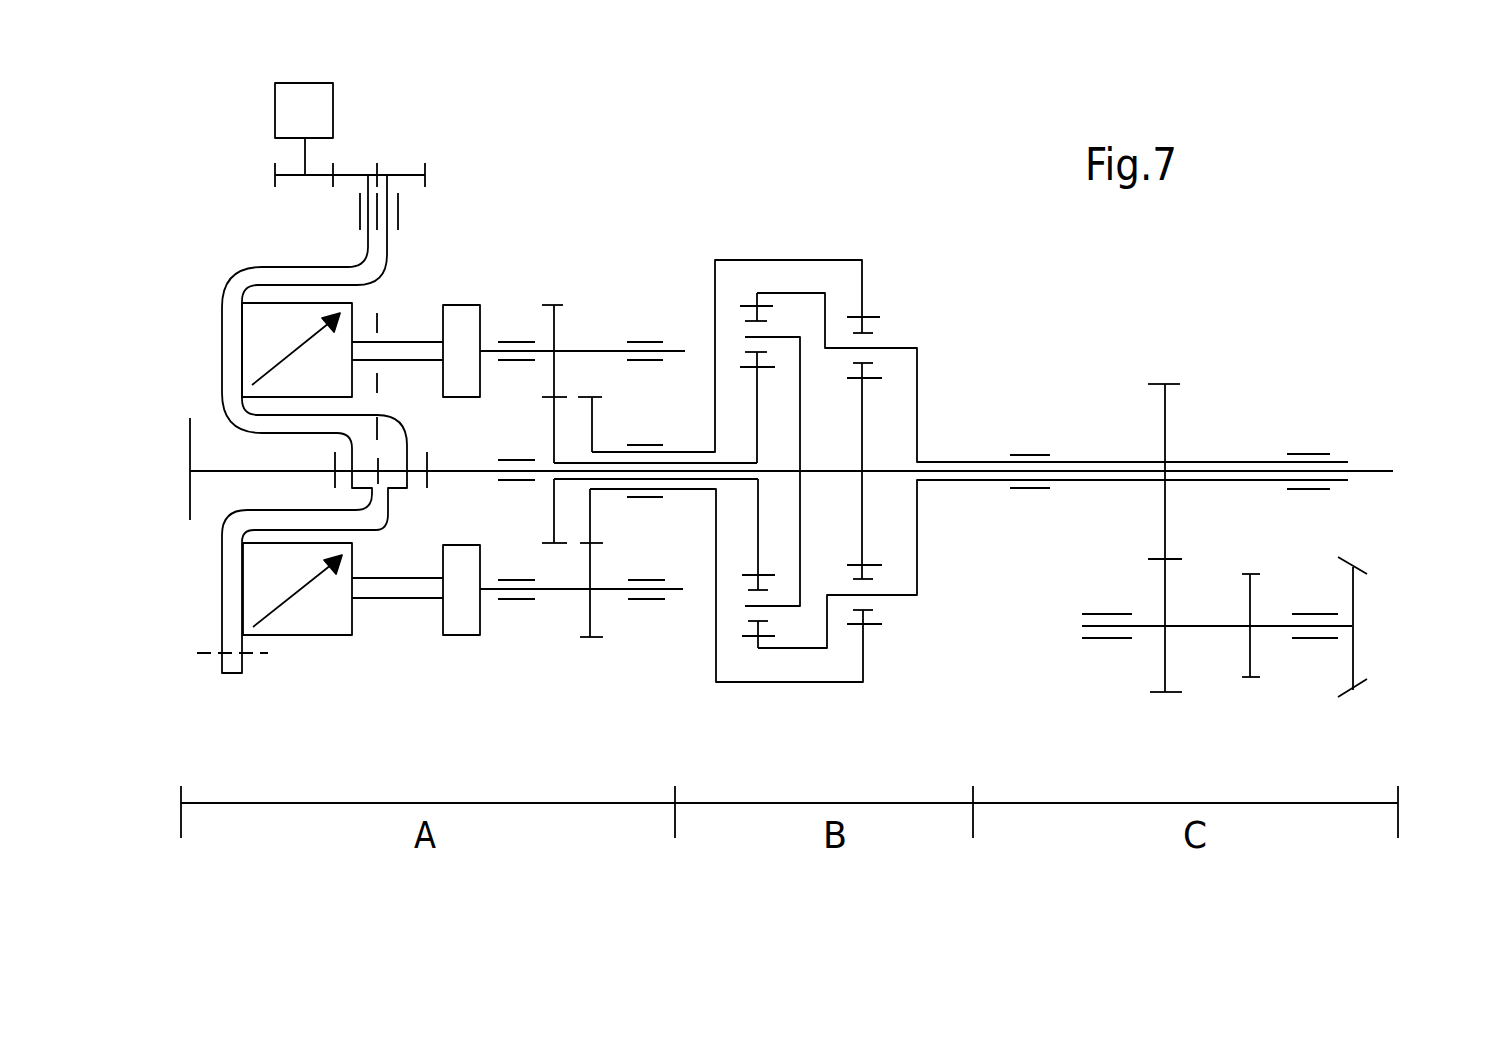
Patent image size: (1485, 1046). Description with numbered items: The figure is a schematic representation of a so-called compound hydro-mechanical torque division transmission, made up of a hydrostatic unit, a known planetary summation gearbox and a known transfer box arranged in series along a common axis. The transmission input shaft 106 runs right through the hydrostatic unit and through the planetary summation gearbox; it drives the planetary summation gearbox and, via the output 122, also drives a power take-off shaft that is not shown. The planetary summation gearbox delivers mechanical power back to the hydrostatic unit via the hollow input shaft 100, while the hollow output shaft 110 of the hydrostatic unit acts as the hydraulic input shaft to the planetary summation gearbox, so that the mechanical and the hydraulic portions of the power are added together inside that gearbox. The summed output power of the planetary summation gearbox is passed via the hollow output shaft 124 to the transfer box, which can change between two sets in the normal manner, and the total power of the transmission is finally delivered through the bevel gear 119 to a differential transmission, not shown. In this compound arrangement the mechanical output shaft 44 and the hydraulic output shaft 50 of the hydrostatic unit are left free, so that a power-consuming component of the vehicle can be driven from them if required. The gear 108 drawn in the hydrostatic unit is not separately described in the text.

The mechanical output shaft 44 is at (592, 350).
The hydraulic output shaft 50 is at (610, 590).
The hollow input shaft 100 is at (697, 462).
The transmission input shaft 106 is at (222, 478).
The gear 108 is at (557, 427).
The hollow output shaft 110 is at (673, 450).
The bevel gear 119 is at (1353, 650).
The output 122 is at (1362, 471).
The hollow output shaft 124 is at (942, 462).